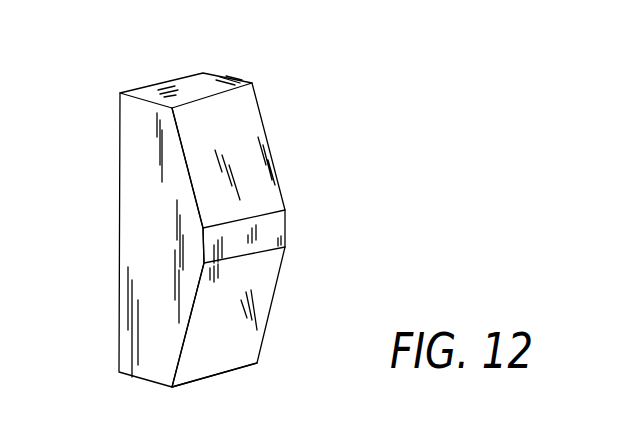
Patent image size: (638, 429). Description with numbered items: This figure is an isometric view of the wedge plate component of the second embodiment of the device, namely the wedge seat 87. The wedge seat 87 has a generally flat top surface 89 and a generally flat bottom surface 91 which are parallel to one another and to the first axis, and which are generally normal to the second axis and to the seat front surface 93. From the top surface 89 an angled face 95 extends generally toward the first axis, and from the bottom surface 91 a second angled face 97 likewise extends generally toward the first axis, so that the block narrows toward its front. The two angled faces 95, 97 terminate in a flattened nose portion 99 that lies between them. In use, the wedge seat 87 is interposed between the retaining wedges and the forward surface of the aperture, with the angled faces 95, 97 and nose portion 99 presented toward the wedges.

The wedge seat 87 is at (302, 97).
The top surface 89 is at (210, 80).
The bottom surface 91 is at (233, 370).
The seat front surface 93 is at (120, 148).
The angled face 95 is at (250, 143).
The angled face 97 is at (252, 302).
The flattened nose portion 99 is at (267, 233).